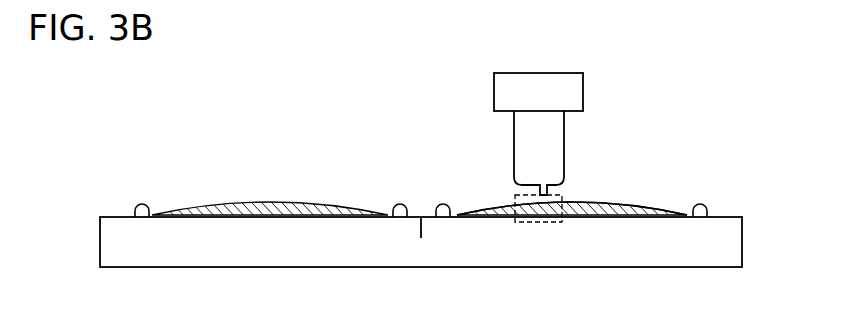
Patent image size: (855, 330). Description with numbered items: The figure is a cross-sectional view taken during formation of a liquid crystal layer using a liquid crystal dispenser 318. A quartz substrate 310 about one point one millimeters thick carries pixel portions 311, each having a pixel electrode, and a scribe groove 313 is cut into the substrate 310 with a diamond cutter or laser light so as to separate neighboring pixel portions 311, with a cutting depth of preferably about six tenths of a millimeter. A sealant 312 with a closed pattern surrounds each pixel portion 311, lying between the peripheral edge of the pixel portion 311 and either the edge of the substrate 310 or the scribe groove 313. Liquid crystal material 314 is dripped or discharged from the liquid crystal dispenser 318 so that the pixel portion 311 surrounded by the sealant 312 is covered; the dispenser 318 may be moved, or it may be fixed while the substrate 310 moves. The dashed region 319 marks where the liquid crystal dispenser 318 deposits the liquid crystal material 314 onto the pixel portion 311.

The substrate 310 is at (113, 235).
The pixel portion 311 is at (655, 218).
The sealant 312 is at (143, 205).
The scribe groove 313 is at (421, 238).
The liquid crystal material 314 is at (632, 204).
The liquid crystal dispenser 318 is at (483, 78).
The dispensing region 319 is at (522, 224).